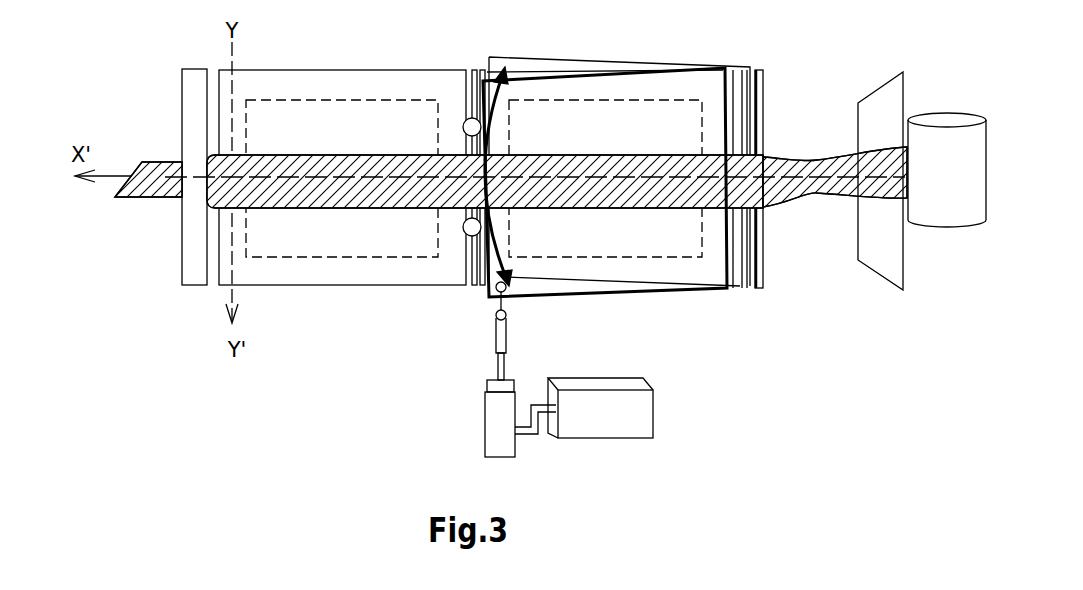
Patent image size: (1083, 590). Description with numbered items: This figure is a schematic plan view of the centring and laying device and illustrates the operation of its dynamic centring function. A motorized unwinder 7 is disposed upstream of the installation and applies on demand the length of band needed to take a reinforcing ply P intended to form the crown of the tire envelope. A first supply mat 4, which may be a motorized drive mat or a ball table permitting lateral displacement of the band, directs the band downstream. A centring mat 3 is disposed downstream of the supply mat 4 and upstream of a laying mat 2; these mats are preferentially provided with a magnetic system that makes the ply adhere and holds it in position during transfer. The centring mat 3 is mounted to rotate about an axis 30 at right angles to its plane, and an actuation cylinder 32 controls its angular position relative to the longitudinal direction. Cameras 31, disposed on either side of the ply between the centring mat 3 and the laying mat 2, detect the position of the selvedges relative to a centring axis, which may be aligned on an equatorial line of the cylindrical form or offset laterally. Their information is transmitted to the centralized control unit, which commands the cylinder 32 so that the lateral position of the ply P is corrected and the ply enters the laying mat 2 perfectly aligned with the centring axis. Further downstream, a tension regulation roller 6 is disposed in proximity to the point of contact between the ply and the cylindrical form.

The laying mat 2 is at (382, 268).
The tension regulation roller 6 is at (187, 110).
The cameras 31 is at (448, 215).
The centring mat 3 is at (618, 177).
The axis 30 is at (745, 182).
The actuation cylinder 32 is at (498, 362).
The supply mat 4 is at (888, 248).
The motorized unwinder 7 is at (935, 182).
The reinforcing ply P is at (328, 200).